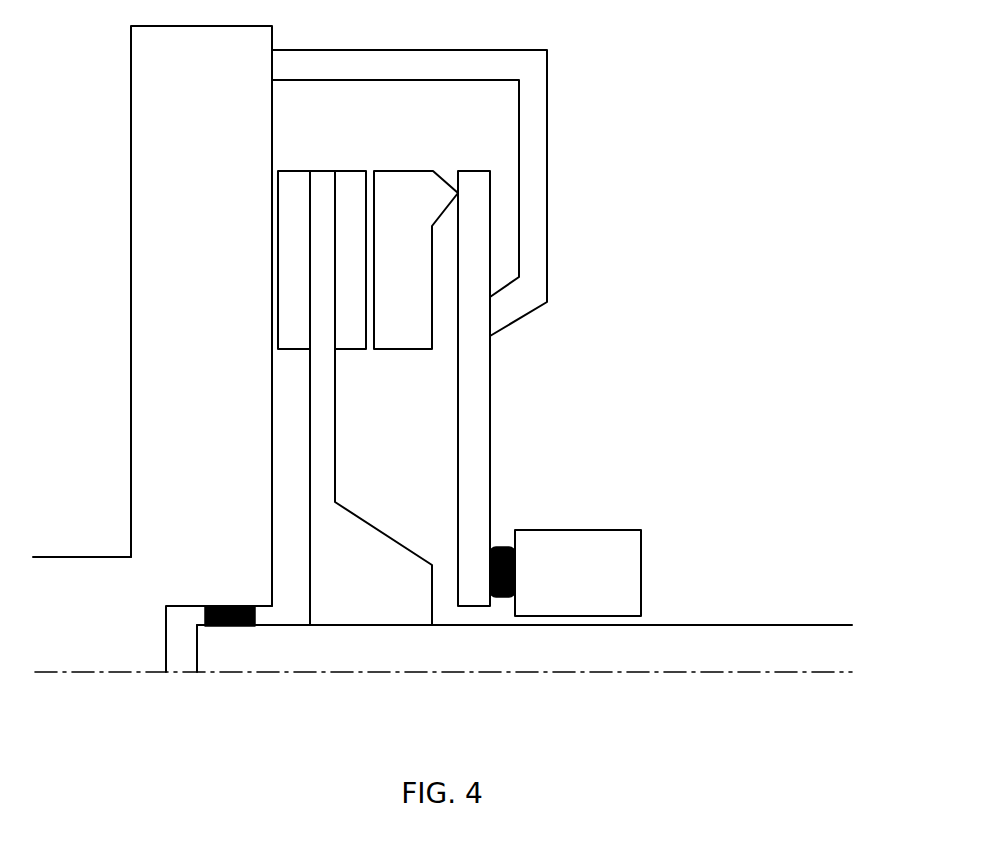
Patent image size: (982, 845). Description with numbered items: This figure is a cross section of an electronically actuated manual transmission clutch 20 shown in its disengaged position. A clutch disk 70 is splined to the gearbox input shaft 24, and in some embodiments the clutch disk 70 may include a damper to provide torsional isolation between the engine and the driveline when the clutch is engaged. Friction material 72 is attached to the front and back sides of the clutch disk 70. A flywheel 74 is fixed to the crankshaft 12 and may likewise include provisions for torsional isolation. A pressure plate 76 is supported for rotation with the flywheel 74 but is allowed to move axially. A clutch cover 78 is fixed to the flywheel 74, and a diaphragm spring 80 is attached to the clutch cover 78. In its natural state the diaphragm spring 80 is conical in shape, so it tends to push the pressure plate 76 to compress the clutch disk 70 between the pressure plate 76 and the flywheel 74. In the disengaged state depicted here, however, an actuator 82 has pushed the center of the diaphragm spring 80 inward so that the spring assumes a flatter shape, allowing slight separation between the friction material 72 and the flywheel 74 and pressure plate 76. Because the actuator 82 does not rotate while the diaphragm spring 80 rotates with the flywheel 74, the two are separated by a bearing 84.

The crankshaft 12 is at (52, 556).
The clutch 20 is at (585, 95).
The gearbox input shaft 24 is at (392, 661).
The clutch disk 70 is at (368, 519).
The friction material 72 is at (287, 170).
The flywheel 74 is at (191, 300).
The pressure plate 76 is at (400, 349).
The clutch cover 78 is at (535, 310).
The diaphragm spring 80 is at (492, 442).
The actuator 82 is at (573, 530).
The bearing 84 is at (498, 547).